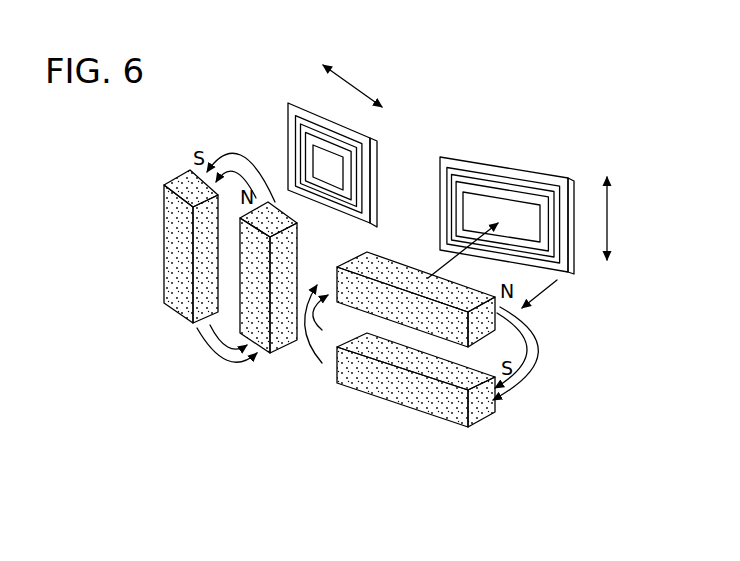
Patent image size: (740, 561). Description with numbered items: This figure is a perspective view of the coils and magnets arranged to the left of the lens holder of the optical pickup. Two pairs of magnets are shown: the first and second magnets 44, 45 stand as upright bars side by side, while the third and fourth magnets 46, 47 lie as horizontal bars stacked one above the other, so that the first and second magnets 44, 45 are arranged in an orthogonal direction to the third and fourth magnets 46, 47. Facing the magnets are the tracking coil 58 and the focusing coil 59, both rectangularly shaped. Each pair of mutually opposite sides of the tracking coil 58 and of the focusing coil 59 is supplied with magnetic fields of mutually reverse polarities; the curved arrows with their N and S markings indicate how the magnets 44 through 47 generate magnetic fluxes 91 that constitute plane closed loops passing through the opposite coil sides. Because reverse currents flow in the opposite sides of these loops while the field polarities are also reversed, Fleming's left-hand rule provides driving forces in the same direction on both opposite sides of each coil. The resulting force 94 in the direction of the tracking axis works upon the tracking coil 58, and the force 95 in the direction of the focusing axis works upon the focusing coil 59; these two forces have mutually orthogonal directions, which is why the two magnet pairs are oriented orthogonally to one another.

The first magnet 44 is at (183, 320).
The second magnet 45 is at (275, 355).
The third magnet 46 is at (395, 253).
The fourth magnet 47 is at (455, 423).
The tracking coil 58 is at (295, 93).
The focusing coil 59 is at (515, 165).
The magnetic flux 91 is at (538, 353).
The force in the direction of the tracking axis 94 is at (355, 90).
The force in the direction of the focusing axis 95 is at (608, 220).